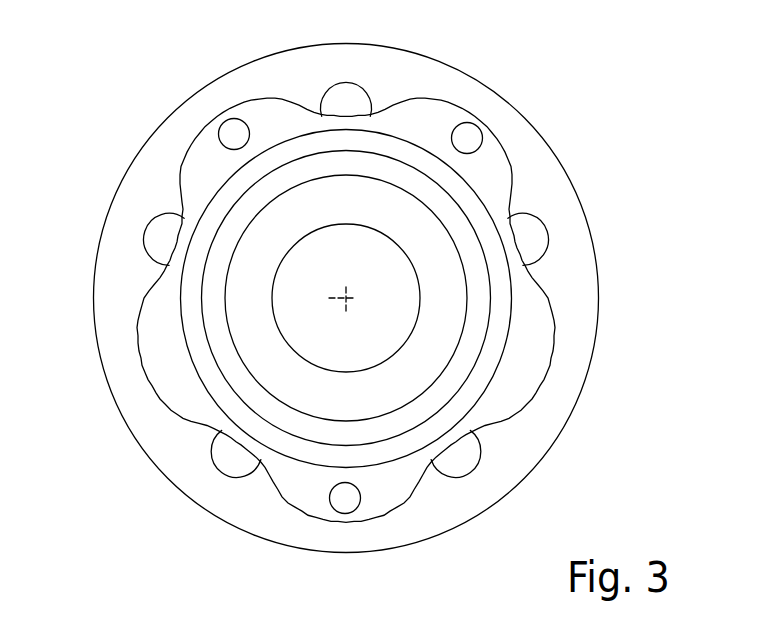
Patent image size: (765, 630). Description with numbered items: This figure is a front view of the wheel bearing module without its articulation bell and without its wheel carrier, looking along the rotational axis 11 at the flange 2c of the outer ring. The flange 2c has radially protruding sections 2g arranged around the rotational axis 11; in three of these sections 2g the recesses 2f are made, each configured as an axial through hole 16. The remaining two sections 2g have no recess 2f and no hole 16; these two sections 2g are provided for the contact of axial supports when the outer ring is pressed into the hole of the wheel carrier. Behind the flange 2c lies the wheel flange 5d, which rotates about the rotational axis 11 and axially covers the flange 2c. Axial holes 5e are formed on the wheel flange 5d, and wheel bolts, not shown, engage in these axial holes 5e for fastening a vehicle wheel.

The flange 2c is at (525, 392).
The recesses 2f is at (232, 127).
The axial through holes 16 is at (379, 327).
The radially protruding sections 2g is at (268, 118).
The axial holes 5e is at (163, 235).
The wheel flange 5d is at (580, 298).
The rotational axis 11 is at (349, 292).